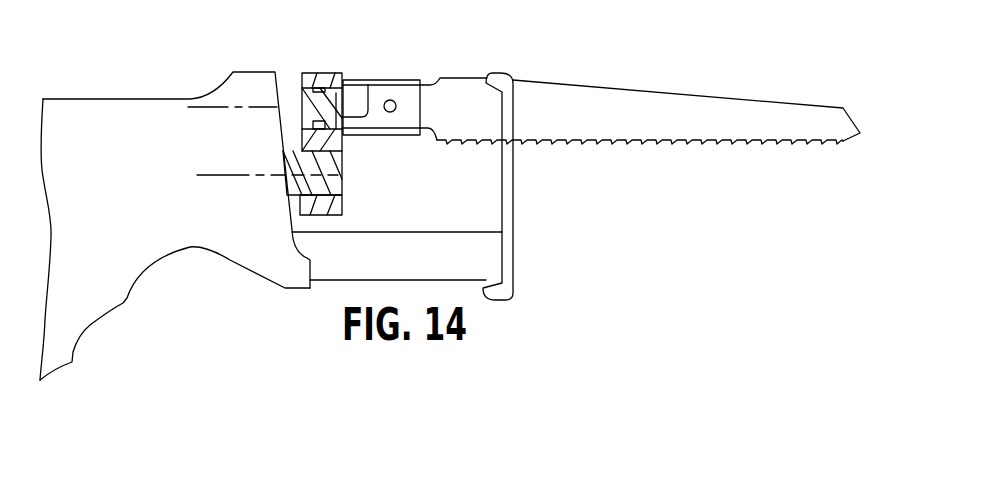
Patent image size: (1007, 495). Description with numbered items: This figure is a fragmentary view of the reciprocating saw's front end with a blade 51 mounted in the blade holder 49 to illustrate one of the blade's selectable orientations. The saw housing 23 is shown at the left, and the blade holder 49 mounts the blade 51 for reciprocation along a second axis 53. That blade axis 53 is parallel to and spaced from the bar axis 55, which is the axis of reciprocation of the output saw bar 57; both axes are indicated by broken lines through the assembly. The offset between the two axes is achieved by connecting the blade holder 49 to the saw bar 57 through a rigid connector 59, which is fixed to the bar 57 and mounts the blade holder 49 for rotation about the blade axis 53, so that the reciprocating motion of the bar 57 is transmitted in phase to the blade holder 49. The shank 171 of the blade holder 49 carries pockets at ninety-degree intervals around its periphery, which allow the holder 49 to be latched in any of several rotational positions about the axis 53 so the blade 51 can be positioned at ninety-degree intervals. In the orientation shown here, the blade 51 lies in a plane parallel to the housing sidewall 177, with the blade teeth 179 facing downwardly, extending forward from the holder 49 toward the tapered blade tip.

The housing 23 is at (160, 118).
The blade holder 49 is at (403, 62).
The blade 51 is at (716, 113).
The second axis 53 is at (236, 98).
The bar axis 55 is at (260, 170).
The output saw bar 57 is at (337, 187).
The rigid connector 59 is at (338, 206).
The shank 171 is at (302, 105).
The housing sidewall 177 is at (128, 262).
The blade teeth 179 is at (643, 140).